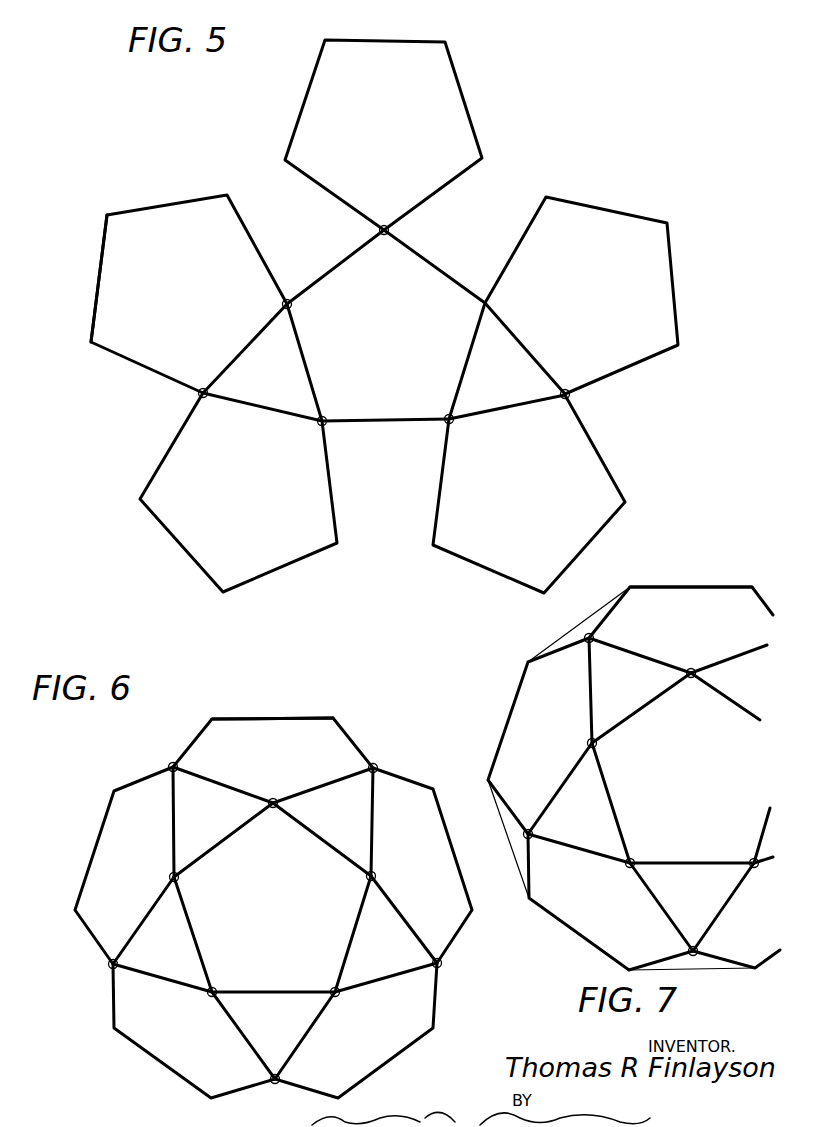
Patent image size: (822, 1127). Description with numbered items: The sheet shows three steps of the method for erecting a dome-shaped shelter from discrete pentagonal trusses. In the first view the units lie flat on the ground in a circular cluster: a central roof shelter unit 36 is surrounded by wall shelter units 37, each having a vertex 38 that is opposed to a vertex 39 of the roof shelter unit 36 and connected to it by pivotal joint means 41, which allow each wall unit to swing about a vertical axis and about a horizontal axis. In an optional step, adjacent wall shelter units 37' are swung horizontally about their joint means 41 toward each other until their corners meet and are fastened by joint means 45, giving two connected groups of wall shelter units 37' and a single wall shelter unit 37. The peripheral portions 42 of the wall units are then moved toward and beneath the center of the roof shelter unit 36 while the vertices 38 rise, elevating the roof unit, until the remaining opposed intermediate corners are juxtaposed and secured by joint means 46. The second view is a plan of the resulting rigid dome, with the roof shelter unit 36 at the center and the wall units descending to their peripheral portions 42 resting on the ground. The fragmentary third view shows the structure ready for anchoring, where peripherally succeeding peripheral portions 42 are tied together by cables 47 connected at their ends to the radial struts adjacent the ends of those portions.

In FIG. 5, the roof shelter unit 36 is at (440, 265).
In FIG. 6, the roof shelter unit 36 is at (296, 889).
In FIG. 7, the roof shelter unit 36 is at (737, 700).
In FIG. 5, the wall shelter unit 37 is at (409, 135).
In FIG. 6, the wall shelter unit 37 is at (273, 908).
In FIG. 7, the wall shelter unit 37 is at (616, 778).
In FIG. 5, the grouped wall shelter unit 37' is at (386, 394).
In FIG. 5, the vertex of wall shelter unit 38 is at (384, 226).
In FIG. 6, the vertex of wall shelter unit 38 is at (275, 800).
In FIG. 7, the vertex of wall shelter unit 38 is at (692, 669).
In FIG. 5, the vertex of roof shelter unit 39 is at (292, 304).
In FIG. 5, the pivotal joint means 41 is at (380, 231).
In FIG. 5, the peripheral portion 42 is at (98, 272).
In FIG. 6, the peripheral portion 42 is at (265, 718).
In FIG. 7, the peripheral portion 42 is at (698, 587).
In FIG. 5, the joint means 45 is at (200, 395).
In FIG. 6, the joint means 45 is at (108, 964).
In FIG. 6, the joint means 46 is at (170, 772).
In FIG. 7, the cable 47 is at (565, 633).